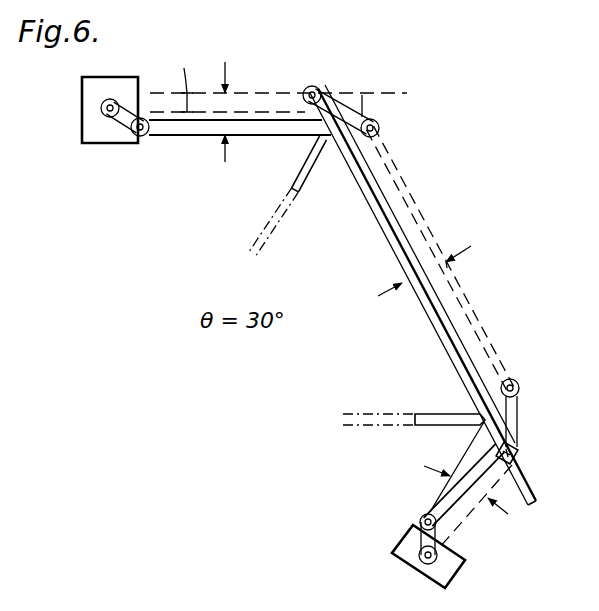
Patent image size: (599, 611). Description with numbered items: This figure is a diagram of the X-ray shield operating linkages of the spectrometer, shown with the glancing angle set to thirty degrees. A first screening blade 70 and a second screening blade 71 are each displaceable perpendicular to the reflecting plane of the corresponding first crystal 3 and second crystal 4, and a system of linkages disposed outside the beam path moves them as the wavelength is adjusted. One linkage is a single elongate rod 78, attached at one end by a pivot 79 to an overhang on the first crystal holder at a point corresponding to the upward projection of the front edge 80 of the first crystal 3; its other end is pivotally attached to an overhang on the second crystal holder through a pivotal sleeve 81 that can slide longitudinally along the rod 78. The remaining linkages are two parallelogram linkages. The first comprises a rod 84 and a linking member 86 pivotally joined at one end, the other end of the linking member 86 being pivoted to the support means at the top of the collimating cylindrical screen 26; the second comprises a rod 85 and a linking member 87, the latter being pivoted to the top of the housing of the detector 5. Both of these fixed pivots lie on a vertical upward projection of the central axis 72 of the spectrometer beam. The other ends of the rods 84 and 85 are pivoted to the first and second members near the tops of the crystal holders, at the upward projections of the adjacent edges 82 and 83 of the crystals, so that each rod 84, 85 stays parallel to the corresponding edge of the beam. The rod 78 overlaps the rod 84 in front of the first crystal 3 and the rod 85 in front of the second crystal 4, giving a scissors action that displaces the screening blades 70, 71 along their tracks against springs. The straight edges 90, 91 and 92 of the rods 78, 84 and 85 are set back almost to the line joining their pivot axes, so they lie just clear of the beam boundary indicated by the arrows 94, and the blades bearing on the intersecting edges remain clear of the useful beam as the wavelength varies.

The first crystal 3 is at (345, 104).
The second crystal 4 is at (520, 414).
The detector 5 is at (450, 570).
The collimating cylindrical screen 26 is at (92, 136).
The first screening blade 70 is at (300, 170).
The second screening blade 71 is at (433, 414).
The central axis of the spectrometer beam 72 is at (179, 78).
The rod 78 is at (385, 222).
The pivot 79 is at (304, 90).
The front edge of the first crystal 80 is at (322, 94).
The pivotal sleeve 81 is at (521, 452).
The adjacent edge of the first crystal 82 is at (381, 130).
The adjacent edge of the second crystal 83 is at (517, 383).
The rod 84 is at (181, 136).
The rod 85 is at (470, 456).
The linking member 86 is at (124, 120).
The linking member 87 is at (419, 545).
The straight edge of rod 78 90 is at (432, 320).
The straight edge of rod 84 91 is at (268, 136).
The straight edge of rod 85 92 is at (433, 499).
The arrows 94 is at (505, 525).